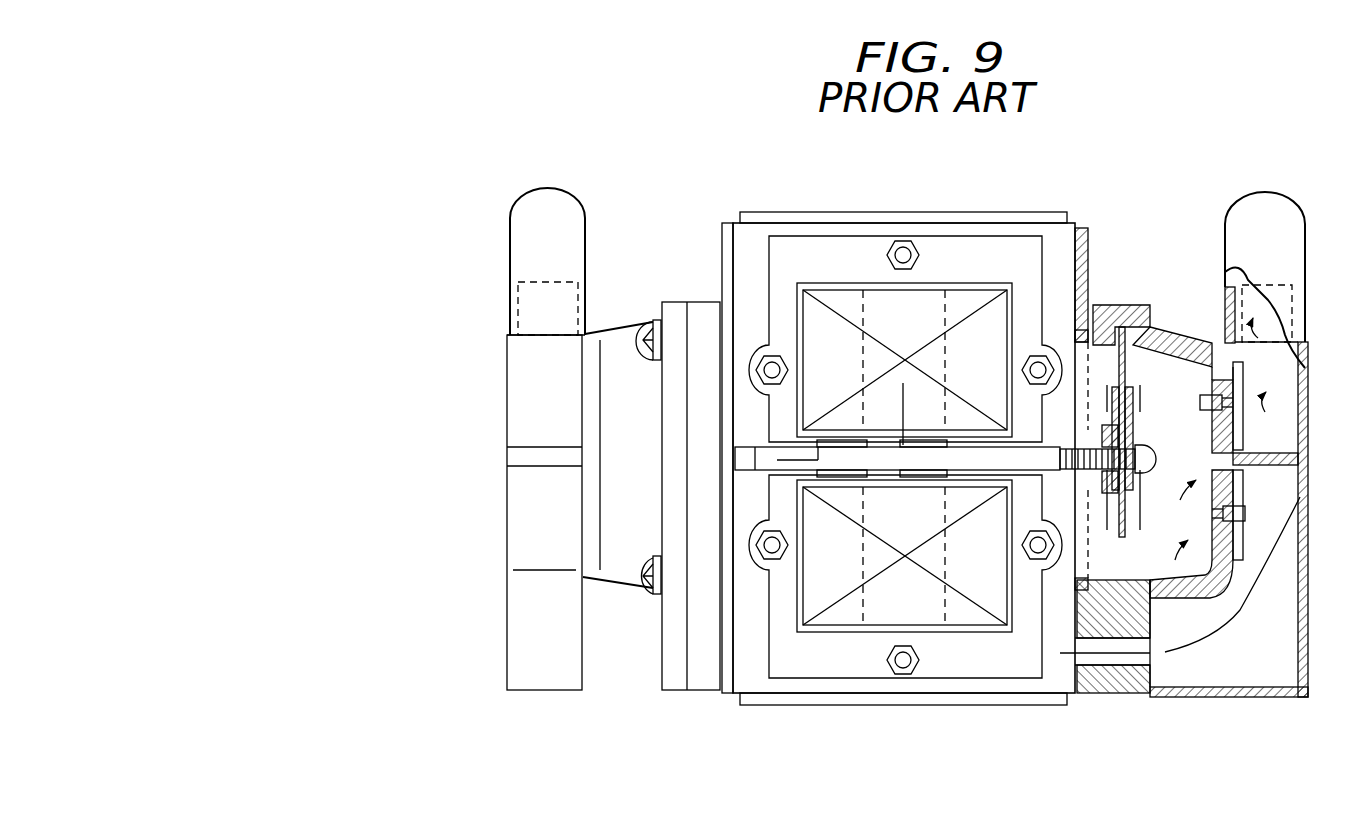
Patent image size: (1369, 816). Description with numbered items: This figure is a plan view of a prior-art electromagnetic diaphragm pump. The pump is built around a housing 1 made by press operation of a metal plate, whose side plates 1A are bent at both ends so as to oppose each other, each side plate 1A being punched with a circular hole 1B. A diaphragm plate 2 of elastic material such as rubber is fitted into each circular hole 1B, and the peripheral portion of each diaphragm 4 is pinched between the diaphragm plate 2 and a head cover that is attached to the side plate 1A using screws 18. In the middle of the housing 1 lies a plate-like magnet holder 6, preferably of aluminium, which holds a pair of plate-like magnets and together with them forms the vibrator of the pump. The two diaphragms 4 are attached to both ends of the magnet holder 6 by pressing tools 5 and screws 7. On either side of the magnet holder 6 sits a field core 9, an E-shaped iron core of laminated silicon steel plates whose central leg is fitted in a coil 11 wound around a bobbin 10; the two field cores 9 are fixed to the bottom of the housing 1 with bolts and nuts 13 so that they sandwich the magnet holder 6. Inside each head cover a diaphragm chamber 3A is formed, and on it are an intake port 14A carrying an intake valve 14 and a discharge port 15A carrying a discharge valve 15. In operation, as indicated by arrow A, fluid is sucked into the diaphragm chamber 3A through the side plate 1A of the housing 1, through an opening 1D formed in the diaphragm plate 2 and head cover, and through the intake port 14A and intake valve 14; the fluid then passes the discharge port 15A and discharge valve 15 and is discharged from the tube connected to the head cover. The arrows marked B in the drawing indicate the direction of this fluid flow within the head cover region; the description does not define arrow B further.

The housing 1 is at (1052, 210).
The side plate 1A is at (727, 246).
The circular hole 1B is at (1078, 336).
The opening 1D is at (1143, 662).
The diaphragm plate 2 is at (697, 312).
The diaphragm chamber 3A is at (1192, 360).
The diaphragm 4 is at (1128, 360).
The pressing tool 5 is at (1128, 386).
The magnet holder 6 is at (1030, 460).
The screw 7 is at (1150, 450).
The field core 9 is at (1005, 245).
The bobbin 10 is at (933, 283).
The coil 11 is at (992, 320).
The nut 13 is at (887, 258).
The intake valve 14 is at (1205, 536).
The intake port 14A is at (1243, 600).
The discharge valve 15 is at (1238, 380).
The discharge port 15A is at (1185, 395).
The screw 18 is at (645, 325).
The arrow A is at (1235, 636).
The air flow path B is at (1265, 338).